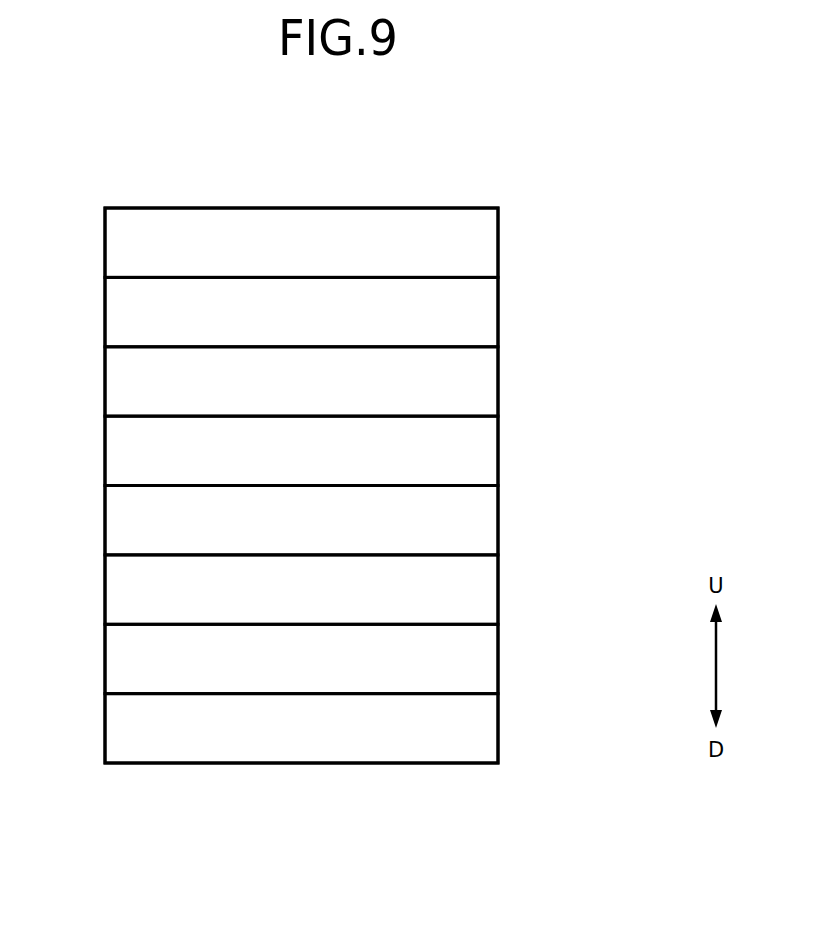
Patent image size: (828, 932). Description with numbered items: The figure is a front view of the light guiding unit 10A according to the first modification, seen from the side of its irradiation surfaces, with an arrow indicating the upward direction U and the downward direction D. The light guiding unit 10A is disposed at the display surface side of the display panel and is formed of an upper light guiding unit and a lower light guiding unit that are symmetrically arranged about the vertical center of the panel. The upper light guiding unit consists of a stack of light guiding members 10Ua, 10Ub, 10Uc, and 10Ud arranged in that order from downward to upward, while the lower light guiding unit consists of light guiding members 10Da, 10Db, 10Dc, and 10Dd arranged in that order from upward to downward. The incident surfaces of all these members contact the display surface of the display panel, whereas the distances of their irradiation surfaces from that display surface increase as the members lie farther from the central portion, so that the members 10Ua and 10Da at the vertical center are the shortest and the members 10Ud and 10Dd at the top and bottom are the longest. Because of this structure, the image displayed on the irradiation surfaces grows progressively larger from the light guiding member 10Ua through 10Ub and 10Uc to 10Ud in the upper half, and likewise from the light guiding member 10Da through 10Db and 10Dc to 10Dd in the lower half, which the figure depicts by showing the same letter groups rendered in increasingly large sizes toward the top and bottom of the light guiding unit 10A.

The light guiding unit 10A is at (106, 182).
The light guiding member 10Ud is at (498, 245).
The light guiding member 10Uc is at (498, 312).
The light guiding member 10Ub is at (498, 382).
The light guiding member 10Ua is at (498, 452).
The light guiding member 10Da is at (498, 524).
The light guiding member 10Db is at (498, 594).
The light guiding member 10Dc is at (498, 661).
The light guiding member 10Dd is at (498, 718).